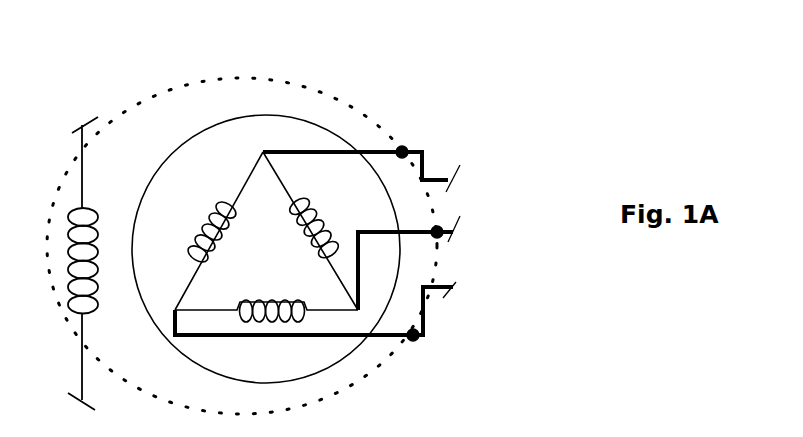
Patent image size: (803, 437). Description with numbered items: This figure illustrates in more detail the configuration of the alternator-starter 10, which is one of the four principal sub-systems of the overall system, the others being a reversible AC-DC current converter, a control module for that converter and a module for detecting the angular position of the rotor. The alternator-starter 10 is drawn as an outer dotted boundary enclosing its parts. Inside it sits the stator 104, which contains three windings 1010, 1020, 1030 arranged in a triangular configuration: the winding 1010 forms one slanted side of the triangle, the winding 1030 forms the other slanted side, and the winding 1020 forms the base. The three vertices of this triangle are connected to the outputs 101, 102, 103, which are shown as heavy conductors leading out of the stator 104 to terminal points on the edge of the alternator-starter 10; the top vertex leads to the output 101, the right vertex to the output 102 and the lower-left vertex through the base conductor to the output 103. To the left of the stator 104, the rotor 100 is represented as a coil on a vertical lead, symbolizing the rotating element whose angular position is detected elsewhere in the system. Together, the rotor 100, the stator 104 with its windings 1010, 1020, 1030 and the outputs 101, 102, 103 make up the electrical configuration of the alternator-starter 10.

The alternator-starter 10 is at (277, 70).
The stator 104 is at (182, 134).
The rotor 100 is at (91, 208).
The winding 1030 is at (200, 228).
The winding 1010 is at (316, 212).
The winding 1020 is at (269, 299).
The output 101 is at (406, 144).
The output 102 is at (444, 224).
The output 103 is at (417, 346).